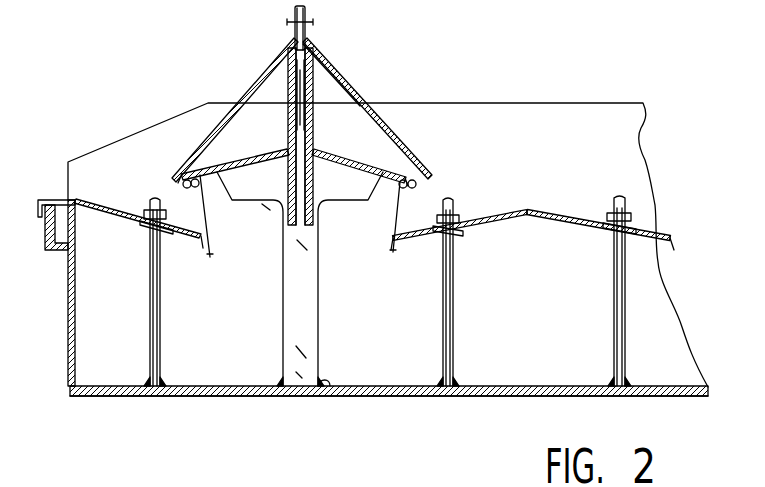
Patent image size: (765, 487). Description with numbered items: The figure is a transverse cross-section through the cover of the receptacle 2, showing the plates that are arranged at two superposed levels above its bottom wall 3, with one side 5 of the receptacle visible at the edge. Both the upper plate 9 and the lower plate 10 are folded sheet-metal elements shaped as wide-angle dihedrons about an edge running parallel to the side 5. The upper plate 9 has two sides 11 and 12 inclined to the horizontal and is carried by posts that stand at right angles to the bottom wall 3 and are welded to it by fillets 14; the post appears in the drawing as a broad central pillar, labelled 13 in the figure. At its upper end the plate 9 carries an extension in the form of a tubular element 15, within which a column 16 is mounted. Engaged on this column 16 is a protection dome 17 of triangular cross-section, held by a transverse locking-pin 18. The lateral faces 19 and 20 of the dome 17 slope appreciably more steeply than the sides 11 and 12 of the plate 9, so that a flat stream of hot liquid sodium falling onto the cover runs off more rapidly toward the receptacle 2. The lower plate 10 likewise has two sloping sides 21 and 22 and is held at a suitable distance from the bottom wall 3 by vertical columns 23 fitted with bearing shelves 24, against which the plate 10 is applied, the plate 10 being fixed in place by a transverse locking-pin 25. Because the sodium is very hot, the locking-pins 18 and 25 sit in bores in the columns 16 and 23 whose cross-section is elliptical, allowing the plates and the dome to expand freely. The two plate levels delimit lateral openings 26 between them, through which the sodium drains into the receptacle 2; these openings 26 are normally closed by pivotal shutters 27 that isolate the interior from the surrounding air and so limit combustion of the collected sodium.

The receptacle 2 is at (210, 398).
The bottom wall 3 is at (410, 396).
The side 5 is at (67, 342).
The plate 9 is at (372, 154).
The plate 10 is at (523, 225).
The side 11 is at (203, 160).
The side 12 is at (385, 186).
The central column 13 is at (292, 348).
The fillet 14 is at (327, 388).
The tubular element 15 is at (288, 128).
The column 16 is at (296, 30).
The protection dome 17 is at (347, 71).
The transverse locking-pin 18 is at (311, 21).
The lateral face 19 is at (365, 99).
The lateral face 20 is at (228, 109).
The sloping side 21 is at (498, 218).
The sloping side 22 is at (573, 213).
The vertical column 23 is at (615, 330).
The bearing shelf 24 is at (430, 238).
The transverse locking-pin 25 is at (628, 214).
The lateral opening 26 is at (415, 207).
The pivotal shutter 27 is at (397, 204).